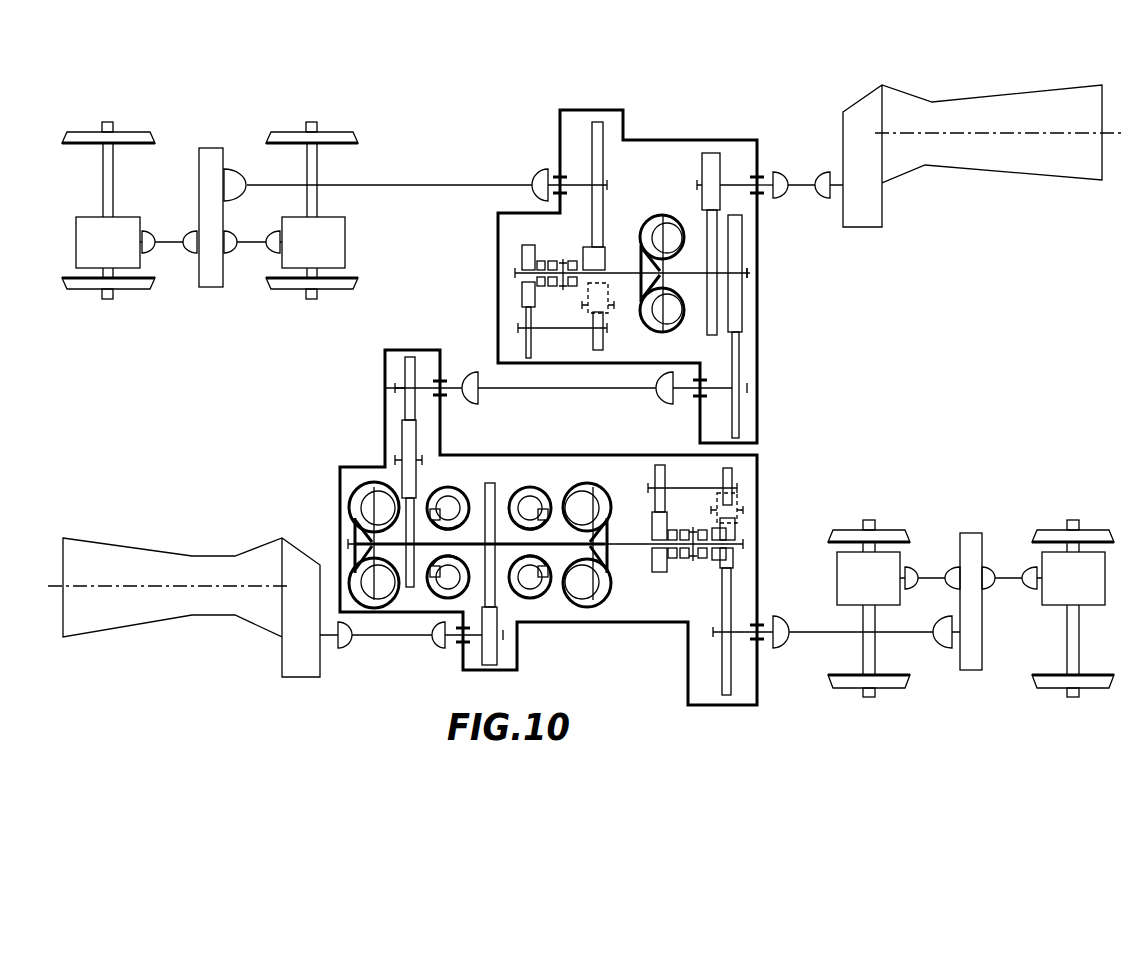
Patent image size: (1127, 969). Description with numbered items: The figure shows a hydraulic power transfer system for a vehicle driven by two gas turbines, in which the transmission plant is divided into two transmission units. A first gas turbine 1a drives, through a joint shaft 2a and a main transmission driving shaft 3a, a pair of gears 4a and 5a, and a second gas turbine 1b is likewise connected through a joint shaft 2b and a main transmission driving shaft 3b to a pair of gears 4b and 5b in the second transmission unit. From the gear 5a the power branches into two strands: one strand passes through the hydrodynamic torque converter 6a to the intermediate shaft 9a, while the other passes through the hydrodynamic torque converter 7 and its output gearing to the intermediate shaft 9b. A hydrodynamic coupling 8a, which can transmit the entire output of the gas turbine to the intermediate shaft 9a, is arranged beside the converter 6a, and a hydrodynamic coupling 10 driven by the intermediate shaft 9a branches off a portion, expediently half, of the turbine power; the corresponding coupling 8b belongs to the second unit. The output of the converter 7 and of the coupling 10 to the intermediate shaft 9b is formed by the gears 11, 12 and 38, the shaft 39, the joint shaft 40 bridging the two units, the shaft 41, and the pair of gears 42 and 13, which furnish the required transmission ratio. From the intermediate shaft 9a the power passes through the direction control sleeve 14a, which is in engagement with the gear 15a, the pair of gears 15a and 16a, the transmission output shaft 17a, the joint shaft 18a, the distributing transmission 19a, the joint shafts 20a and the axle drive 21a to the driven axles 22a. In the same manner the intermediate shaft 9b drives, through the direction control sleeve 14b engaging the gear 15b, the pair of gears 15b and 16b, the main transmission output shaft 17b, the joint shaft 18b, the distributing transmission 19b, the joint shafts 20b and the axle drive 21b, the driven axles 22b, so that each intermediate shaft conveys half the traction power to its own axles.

The gas turbine 1a is at (125, 563).
The gas turbine 1b is at (1053, 112).
The joint shaft 2a is at (391, 640).
The joint shaft 2b is at (805, 177).
The main transmission driving shaft 3a is at (451, 640).
The main transmission driving shaft 3b is at (768, 168).
The gear 4a is at (492, 655).
The gear 4b is at (712, 165).
The gear 5a is at (493, 485).
The gear 5b is at (708, 250).
The hydrodynamic torque converter 6a is at (533, 493).
The hydrodynamic torque converter 7 is at (453, 497).
The hydrodynamic coupling 8a is at (578, 500).
The hydrodynamic coupling 8b is at (658, 230).
The intermediate shaft 9a is at (627, 542).
The intermediate shaft 9b is at (515, 270).
The hydrodynamic coupling 10 is at (383, 497).
The gear 11 is at (413, 517).
The gear 12 is at (410, 447).
The gear 13 is at (745, 247).
The direction control sleeve 14a is at (700, 555).
The direction control sleeve 14b is at (550, 263).
The gear 15a is at (728, 533).
The gear 15b is at (590, 250).
The gear 16a is at (725, 580).
The gear 16b is at (598, 123).
The transmission output shaft 17a is at (762, 633).
The main transmission output shaft 17b is at (553, 183).
The joint shaft 18a is at (803, 635).
The joint shaft 18b is at (257, 183).
The distributing transmission 19a is at (977, 542).
The distributing transmission 19b is at (210, 160).
The joint shafts 20a is at (1005, 577).
The joint shafts 20b is at (243, 243).
The axle drive 21a is at (1060, 595).
The axle drive 21b is at (133, 242).
The axles 22a is at (1073, 632).
The axles 22b is at (312, 120).
The gear 38 is at (408, 373).
The shaft 39 is at (427, 387).
The joint shaft 40 is at (487, 385).
The shaft 41 is at (688, 398).
The gear 42 is at (745, 338).